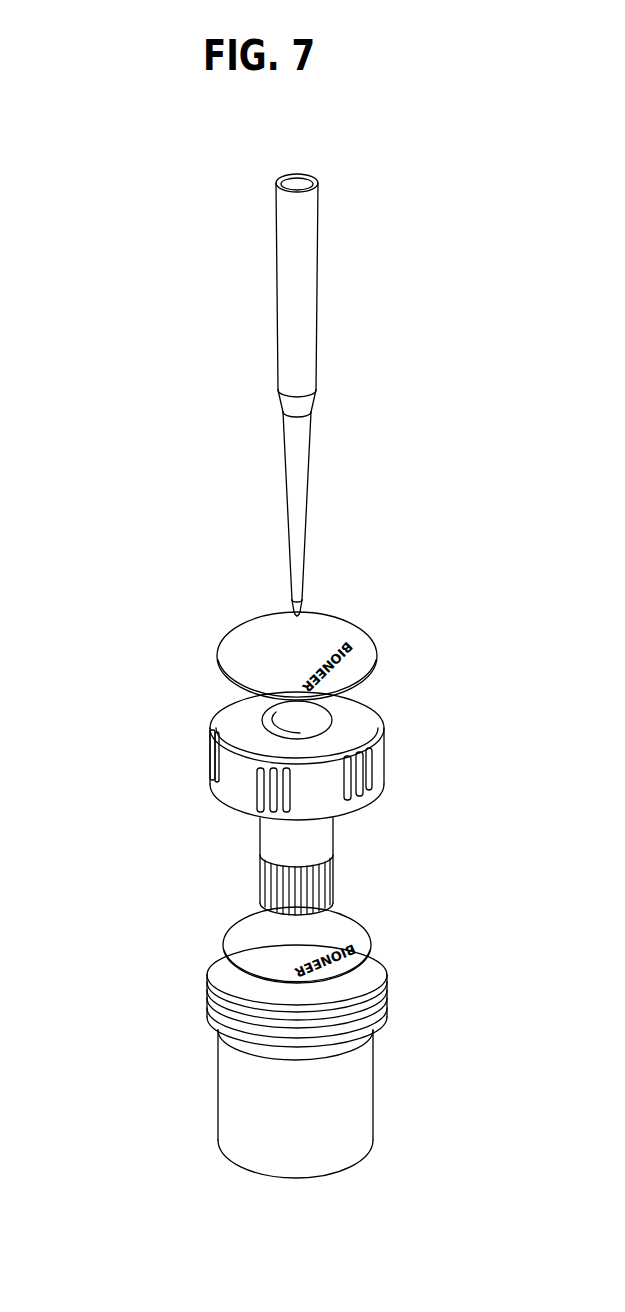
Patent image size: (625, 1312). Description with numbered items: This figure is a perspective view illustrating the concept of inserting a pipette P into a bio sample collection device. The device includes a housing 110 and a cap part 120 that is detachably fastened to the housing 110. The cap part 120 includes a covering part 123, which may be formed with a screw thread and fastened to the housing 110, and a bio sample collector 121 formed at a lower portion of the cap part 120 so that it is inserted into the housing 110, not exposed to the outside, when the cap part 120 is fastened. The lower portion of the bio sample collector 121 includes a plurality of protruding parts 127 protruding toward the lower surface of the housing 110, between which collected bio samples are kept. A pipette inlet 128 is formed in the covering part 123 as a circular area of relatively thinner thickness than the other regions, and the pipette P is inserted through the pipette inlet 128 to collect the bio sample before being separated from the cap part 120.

The pipette P is at (287, 297).
The housing 110 is at (233, 1094).
The cap part 120 is at (102, 762).
The bio sample collector 121 is at (279, 850).
The covering part 123 is at (237, 786).
The protruding parts 127 is at (264, 905).
The pipette inlet 128 is at (297, 726).